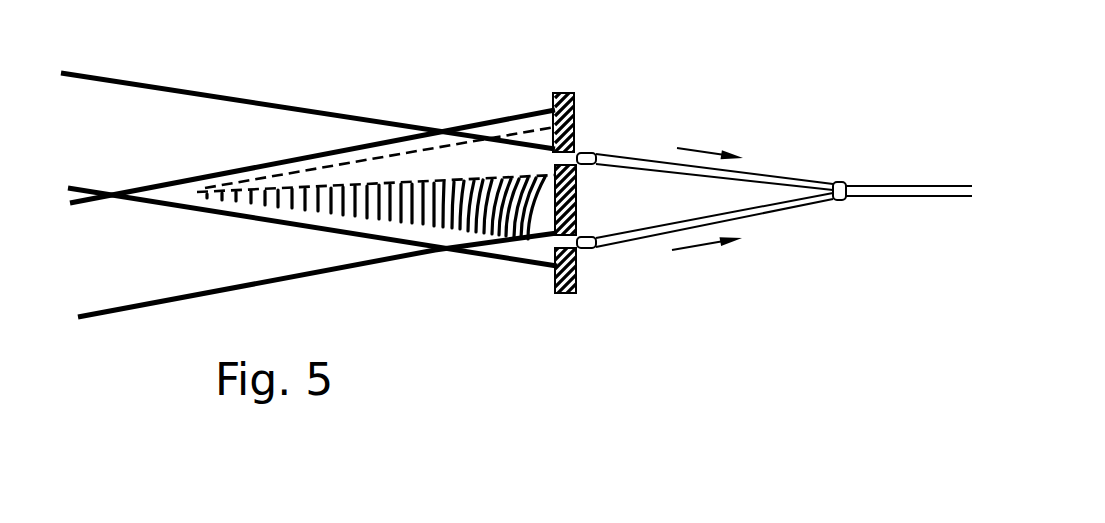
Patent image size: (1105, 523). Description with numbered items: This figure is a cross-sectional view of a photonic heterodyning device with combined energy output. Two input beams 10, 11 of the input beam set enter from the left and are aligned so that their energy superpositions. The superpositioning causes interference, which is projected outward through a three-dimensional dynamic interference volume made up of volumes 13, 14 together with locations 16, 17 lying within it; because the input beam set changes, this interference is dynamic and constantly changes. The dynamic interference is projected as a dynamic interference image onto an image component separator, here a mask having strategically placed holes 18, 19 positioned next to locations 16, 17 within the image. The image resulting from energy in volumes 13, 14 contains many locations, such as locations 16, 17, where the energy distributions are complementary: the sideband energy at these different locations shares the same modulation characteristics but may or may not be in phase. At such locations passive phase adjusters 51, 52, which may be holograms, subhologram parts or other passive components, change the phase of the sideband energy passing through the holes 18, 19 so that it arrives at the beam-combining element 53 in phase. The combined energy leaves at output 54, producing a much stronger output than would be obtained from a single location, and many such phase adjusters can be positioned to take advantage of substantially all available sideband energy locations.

The input beam 10 is at (190, 144).
The input beam 11 is at (182, 248).
The volume 13 is at (437, 158).
The volume 14 is at (445, 214).
The location 16 is at (541, 151).
The location 17 is at (540, 246).
The hole 18 is at (573, 150).
The hole 19 is at (578, 252).
The passive phase adjuster 51 is at (599, 140).
The passive phase adjuster 52 is at (610, 267).
The beam-combining element 53 is at (842, 156).
The output 54 is at (976, 191).